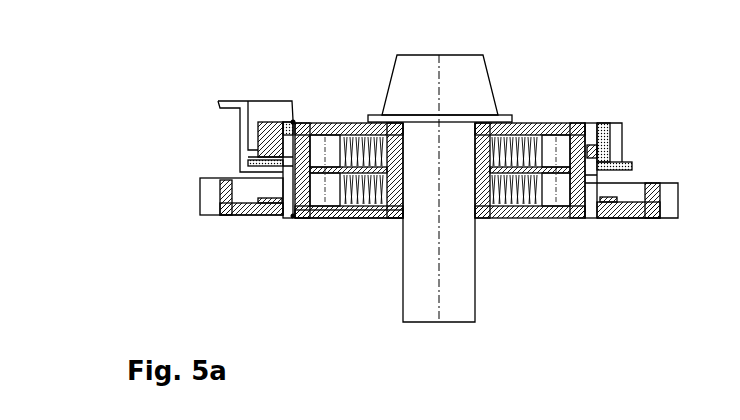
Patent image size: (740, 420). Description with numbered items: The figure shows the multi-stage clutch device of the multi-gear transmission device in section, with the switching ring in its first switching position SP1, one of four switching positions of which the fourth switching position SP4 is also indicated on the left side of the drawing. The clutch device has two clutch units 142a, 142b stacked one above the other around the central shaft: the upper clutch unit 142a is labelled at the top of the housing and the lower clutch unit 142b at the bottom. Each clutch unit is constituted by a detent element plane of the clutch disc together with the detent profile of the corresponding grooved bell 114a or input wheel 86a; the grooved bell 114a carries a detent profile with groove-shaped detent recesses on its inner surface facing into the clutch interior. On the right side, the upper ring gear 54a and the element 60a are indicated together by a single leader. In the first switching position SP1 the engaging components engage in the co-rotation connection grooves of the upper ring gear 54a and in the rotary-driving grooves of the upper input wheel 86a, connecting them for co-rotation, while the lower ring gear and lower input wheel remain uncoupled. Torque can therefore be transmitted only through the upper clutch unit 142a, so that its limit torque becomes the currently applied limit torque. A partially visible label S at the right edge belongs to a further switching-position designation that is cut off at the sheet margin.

The upper clutch unit 142a is at (310, 102).
The lower clutch unit 142b is at (316, 229).
The upper input wheel 86a is at (539, 148).
The grooved bell 114a is at (539, 126).
The upper ring gear 54a is at (658, 157).
The bracket flange 60a is at (609, 126).
The first switching position SP1 is at (240, 148).
The fourth switching position SP4 is at (200, 178).
The spring position label S is at (735, 171).